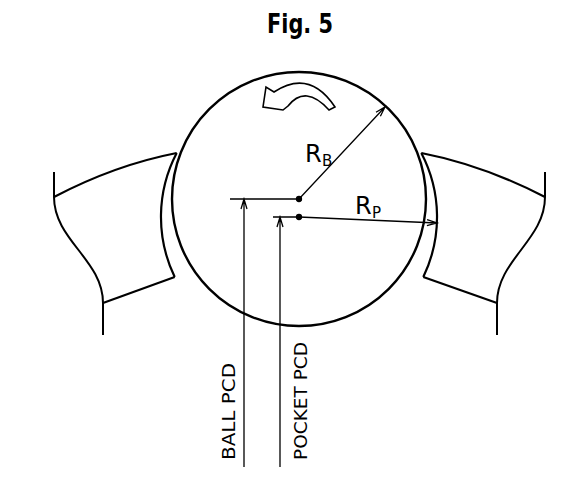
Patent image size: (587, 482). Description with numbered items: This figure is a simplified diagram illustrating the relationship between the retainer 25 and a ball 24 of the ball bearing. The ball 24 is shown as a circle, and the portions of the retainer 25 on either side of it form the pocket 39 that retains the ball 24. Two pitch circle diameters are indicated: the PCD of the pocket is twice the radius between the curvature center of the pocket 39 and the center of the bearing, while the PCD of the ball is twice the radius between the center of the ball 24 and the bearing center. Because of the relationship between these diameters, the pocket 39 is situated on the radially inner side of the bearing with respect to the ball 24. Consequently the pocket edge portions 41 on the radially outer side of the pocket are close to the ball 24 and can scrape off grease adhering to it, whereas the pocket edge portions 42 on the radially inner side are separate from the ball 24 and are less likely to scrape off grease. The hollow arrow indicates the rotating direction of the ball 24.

The ball 24 is at (353, 327).
The retainer 25 is at (504, 166).
The pocket 39 is at (168, 252).
The pocket edge portions 41 is at (177, 153).
The pocket edge portions 42 is at (174, 278).